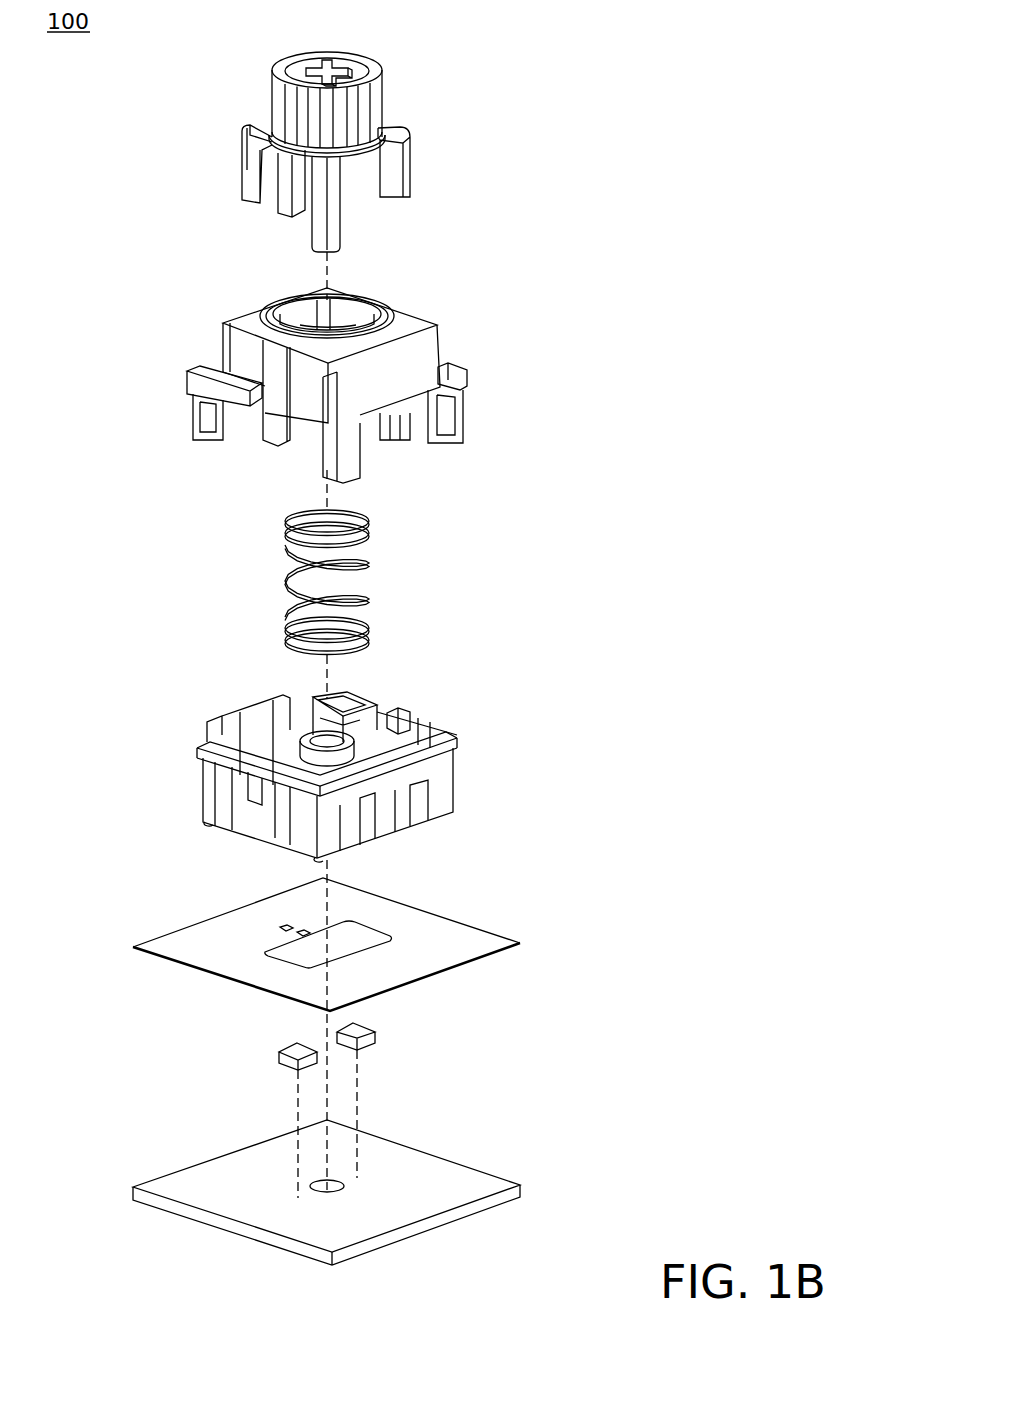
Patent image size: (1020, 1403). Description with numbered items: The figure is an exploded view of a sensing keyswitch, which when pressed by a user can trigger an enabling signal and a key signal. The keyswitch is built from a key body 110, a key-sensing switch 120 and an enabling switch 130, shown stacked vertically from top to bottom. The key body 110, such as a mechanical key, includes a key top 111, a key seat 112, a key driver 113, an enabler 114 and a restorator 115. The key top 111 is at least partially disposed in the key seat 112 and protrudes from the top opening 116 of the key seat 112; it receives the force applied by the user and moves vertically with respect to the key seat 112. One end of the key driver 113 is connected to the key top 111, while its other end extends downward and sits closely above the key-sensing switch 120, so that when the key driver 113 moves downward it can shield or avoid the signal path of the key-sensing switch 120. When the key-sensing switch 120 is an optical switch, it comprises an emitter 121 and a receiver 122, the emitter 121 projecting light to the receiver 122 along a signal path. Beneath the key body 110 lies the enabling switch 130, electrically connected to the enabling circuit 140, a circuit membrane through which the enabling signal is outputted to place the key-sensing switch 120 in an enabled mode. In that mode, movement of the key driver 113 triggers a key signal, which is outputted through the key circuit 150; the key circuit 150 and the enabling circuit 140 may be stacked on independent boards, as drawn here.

The key body 110 is at (584, 62).
The key top 111 is at (383, 102).
The key seat 112 is at (390, 566).
The key driver 113 is at (332, 184).
The enabler 114 is at (302, 195).
The restorator 115 is at (372, 542).
The top opening 116 is at (354, 316).
The key-sensing switch 120 is at (419, 1104).
The emitter 121 is at (367, 1033).
The receiver 122 is at (312, 1059).
The enabling switch 130 is at (282, 924).
The enabling circuit 140 is at (318, 940).
The key circuit 150 is at (440, 1188).